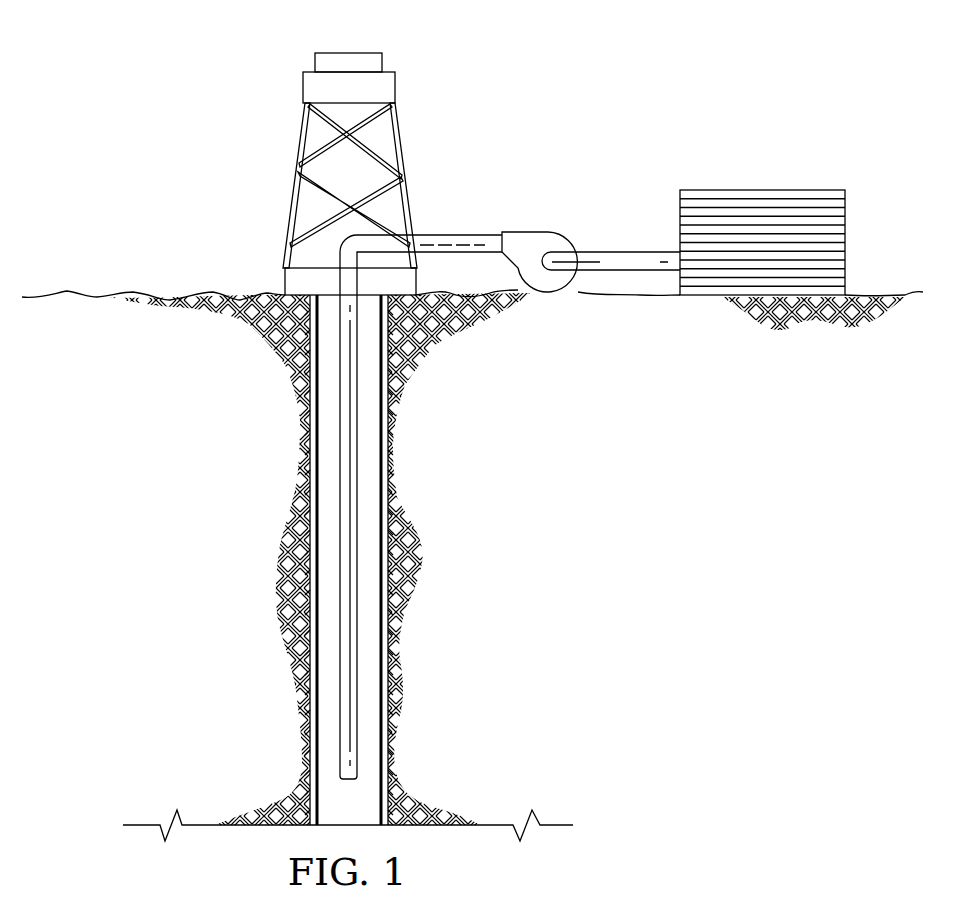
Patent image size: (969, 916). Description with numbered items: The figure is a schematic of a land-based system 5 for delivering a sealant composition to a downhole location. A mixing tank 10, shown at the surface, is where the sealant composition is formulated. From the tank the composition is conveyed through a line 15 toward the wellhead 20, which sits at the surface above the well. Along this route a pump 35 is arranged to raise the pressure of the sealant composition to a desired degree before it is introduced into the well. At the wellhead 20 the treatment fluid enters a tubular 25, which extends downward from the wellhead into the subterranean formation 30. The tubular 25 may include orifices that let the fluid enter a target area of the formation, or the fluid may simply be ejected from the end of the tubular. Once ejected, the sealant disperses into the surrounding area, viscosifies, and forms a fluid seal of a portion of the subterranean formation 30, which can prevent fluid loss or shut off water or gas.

The system 5 is at (232, 83).
The mixing tank 10 is at (762, 190).
The line 15 is at (455, 232).
The wellhead 20 is at (285, 280).
The tubular 25 is at (340, 688).
The subterranean formation 30 is at (246, 551).
The pump 35 is at (523, 232).